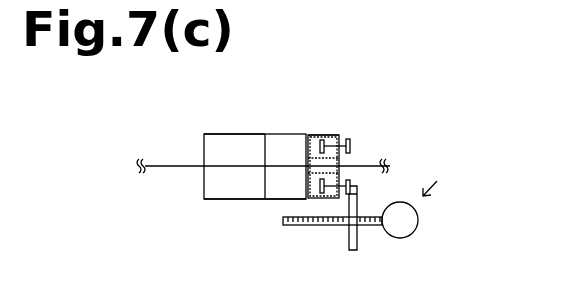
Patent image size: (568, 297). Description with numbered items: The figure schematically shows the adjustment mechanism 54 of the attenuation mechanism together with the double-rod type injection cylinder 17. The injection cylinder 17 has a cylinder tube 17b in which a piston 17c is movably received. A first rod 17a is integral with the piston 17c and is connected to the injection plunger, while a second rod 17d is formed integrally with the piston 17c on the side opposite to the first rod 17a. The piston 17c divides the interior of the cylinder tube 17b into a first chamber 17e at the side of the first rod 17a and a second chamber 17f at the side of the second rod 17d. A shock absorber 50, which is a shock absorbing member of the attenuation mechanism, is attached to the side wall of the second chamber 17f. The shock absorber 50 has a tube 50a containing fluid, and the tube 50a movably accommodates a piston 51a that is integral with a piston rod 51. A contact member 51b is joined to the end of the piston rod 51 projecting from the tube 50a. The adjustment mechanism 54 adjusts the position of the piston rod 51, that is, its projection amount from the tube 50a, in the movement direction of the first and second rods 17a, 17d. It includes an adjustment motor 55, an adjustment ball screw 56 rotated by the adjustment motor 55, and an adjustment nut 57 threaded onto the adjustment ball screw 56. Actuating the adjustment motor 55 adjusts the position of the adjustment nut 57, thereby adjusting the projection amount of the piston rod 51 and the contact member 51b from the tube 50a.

The injection cylinder 17 is at (207, 134).
The first rod 17a is at (163, 167).
The cylinder tube 17b is at (215, 199).
The piston 17c is at (268, 187).
The second rod 17d is at (347, 165).
The first chamber 17e is at (232, 142).
The second chamber 17f is at (290, 193).
The shock absorber 50 is at (318, 134).
The tube 50a is at (331, 134).
The piston rod 51 is at (333, 144).
The piston 51a is at (310, 142).
The contact member 51b is at (351, 141).
The adjustment mechanism 54 is at (444, 183).
The adjustment motor 55 is at (418, 220).
The adjustment ball screw 56 is at (312, 228).
The adjustment nut 57 is at (356, 250).